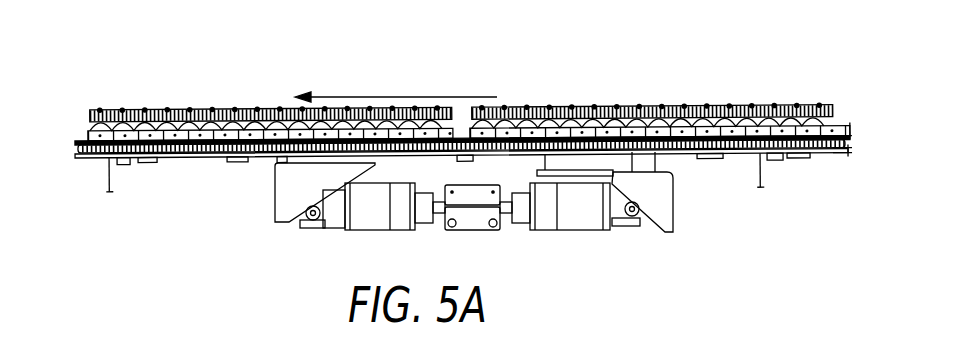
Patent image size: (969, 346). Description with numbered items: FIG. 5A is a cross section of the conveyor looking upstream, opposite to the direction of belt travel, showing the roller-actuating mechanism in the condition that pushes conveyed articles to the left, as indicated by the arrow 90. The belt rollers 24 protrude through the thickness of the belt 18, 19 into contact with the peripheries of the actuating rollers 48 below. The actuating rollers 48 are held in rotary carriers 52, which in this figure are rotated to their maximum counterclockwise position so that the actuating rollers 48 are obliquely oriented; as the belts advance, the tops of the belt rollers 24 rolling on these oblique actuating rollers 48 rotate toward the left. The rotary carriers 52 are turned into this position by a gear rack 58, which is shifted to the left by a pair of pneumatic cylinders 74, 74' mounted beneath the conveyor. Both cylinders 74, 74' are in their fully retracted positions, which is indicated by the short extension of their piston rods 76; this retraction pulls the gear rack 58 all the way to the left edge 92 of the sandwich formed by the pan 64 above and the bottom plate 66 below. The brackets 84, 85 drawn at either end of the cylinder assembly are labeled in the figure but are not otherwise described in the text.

The belt 18 is at (178, 110).
The belt 19 is at (767, 107).
The belt rollers 24 is at (528, 108).
The actuating rollers 48 is at (627, 127).
The rotary carriers 52 is at (833, 130).
The gear rack 58 is at (840, 148).
The pan 64 is at (80, 140).
The bottom plate 66 is at (95, 160).
The pneumatic cylinder 74 is at (602, 234).
The pneumatic cylinder 74' is at (372, 230).
The piston rods 76 is at (440, 217).
The right bracket 84 is at (663, 207).
The left bracket 85 is at (287, 192).
The arrow 90 is at (365, 96).
The left edge 92 is at (77, 150).